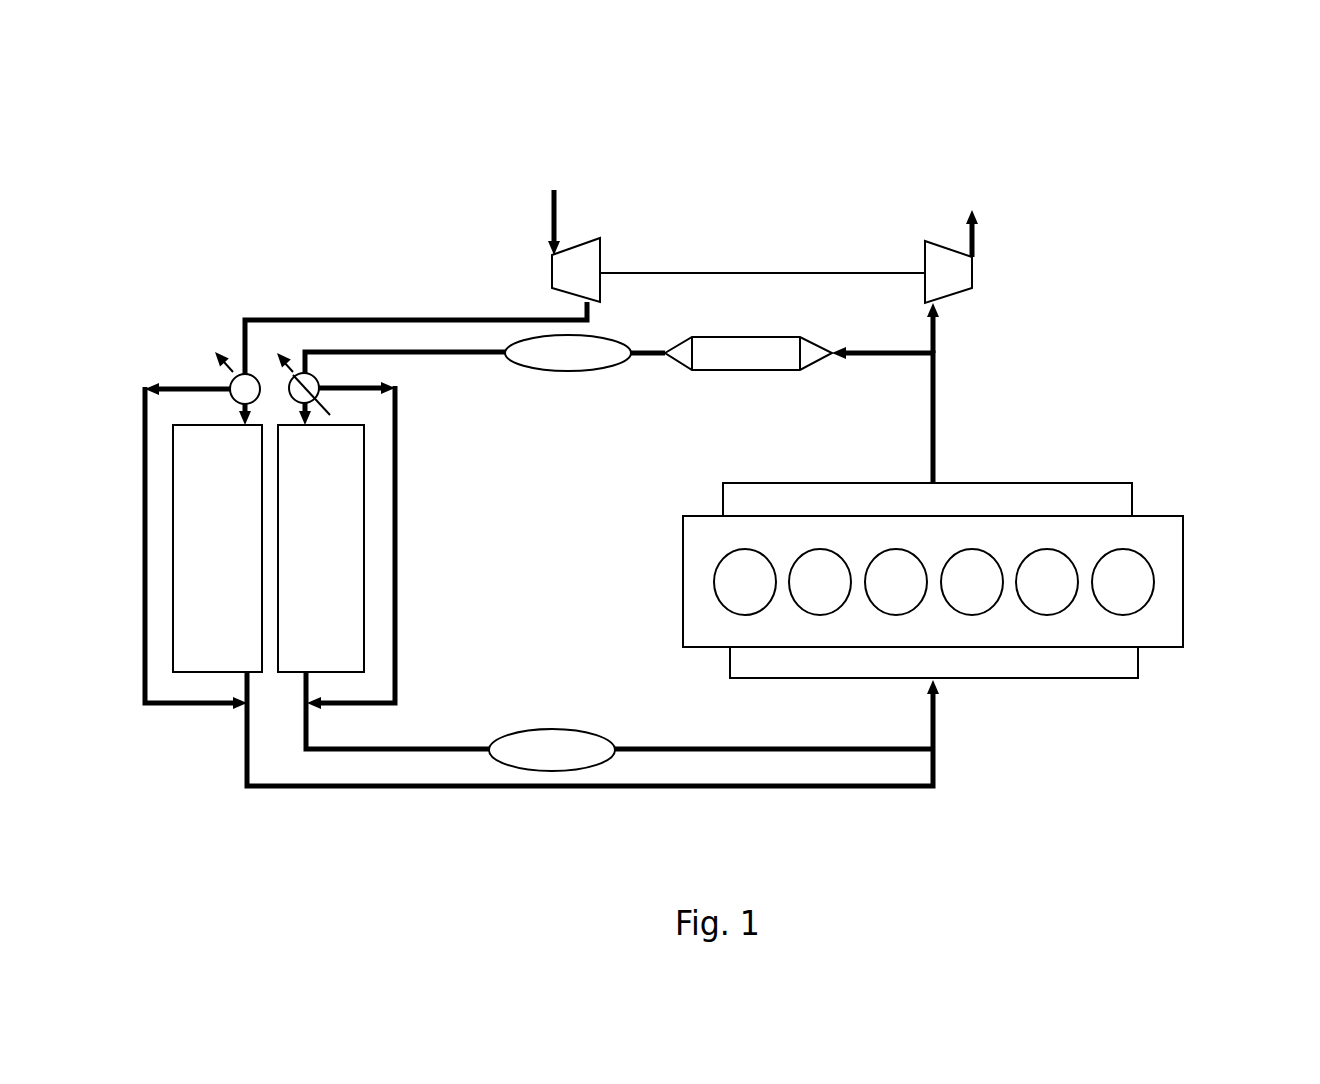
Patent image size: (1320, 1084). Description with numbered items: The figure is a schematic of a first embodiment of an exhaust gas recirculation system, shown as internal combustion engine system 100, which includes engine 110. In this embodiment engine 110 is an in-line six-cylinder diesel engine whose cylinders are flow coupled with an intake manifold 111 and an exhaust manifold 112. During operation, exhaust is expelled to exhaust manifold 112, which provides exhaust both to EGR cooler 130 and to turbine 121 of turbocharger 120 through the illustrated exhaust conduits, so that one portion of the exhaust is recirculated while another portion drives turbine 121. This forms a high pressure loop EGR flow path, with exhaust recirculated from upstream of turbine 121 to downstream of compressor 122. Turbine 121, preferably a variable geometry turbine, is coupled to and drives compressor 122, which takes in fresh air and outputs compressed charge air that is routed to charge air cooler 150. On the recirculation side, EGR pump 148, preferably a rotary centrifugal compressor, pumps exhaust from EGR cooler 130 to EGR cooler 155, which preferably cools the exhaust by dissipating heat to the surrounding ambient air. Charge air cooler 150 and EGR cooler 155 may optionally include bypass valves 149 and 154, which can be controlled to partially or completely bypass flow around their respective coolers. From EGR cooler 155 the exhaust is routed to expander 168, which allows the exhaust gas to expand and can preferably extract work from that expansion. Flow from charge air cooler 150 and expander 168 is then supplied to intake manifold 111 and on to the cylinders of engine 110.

The internal combustion engine system 100 is at (306, 136).
The engine 110 is at (1165, 578).
The intake manifold 111 is at (1122, 662).
The exhaust manifold 112 is at (1115, 497).
The turbocharger 120 is at (762, 258).
The turbine 121 is at (957, 275).
The compressor 122 is at (580, 265).
The EGR cooler 130 is at (747, 353).
The EGR pump 148 is at (568, 373).
The bypass valve 149 is at (268, 413).
The charge air cooler 150 is at (238, 505).
The bypass valve 154 is at (318, 397).
The EGR cooler 155 is at (343, 505).
The expander 168 is at (553, 748).